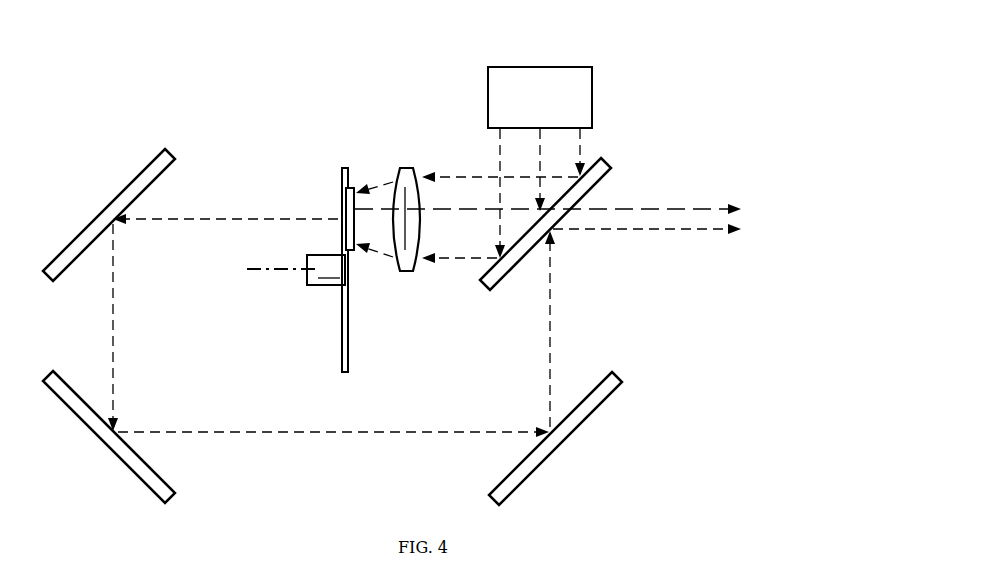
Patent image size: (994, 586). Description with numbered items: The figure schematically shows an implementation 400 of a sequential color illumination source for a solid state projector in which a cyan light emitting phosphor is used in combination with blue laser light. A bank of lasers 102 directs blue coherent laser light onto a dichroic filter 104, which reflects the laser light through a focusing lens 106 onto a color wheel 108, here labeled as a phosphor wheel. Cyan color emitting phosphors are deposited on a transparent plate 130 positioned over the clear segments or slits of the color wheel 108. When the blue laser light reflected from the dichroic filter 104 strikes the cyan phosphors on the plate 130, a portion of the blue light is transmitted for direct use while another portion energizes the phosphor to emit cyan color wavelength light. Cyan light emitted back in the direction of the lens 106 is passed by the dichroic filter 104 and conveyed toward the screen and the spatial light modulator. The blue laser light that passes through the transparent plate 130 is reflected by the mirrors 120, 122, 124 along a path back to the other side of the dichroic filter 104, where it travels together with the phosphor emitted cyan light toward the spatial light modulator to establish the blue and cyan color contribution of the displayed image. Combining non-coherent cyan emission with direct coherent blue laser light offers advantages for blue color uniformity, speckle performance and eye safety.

The implementation 400 is at (236, 87).
The bank of lasers 102 is at (488, 95).
The dichroic filter 104 is at (481, 283).
The focusing lens 106 is at (406, 167).
The color wheel 108 is at (342, 323).
The transparent plate 130 is at (345, 205).
The mirror 120 is at (114, 197).
The mirror 122 is at (104, 442).
The mirror 124 is at (546, 458).